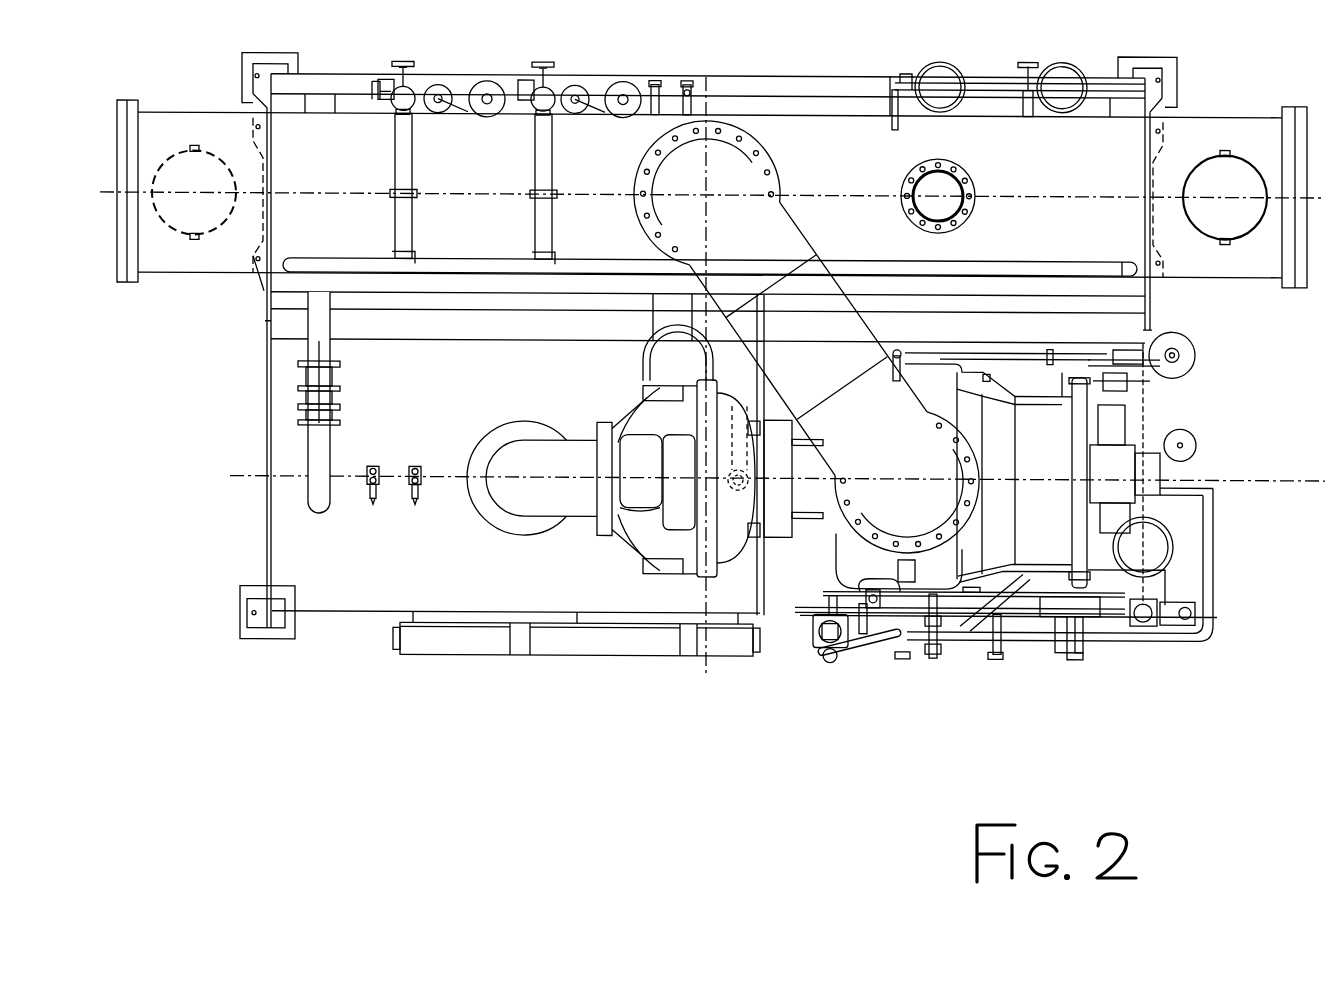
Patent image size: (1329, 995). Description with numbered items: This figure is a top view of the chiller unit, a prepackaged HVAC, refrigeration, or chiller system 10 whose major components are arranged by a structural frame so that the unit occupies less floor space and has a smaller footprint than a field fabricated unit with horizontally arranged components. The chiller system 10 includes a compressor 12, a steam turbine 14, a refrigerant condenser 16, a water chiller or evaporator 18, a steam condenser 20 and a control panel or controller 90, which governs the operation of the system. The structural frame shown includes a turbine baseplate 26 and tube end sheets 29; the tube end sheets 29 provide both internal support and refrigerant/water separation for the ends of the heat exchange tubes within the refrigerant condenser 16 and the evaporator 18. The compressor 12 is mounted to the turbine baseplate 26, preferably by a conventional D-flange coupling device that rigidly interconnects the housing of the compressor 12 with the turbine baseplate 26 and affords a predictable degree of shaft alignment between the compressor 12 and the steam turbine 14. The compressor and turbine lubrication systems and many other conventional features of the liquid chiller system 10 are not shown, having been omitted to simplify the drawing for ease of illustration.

The chiller system 10 is at (240, 732).
The compressor 12 is at (630, 414).
The steam turbine 14 is at (1040, 405).
The refrigerant condenser 16 is at (870, 80).
The water chiller or evaporator 18 is at (318, 602).
The steam condenser 20 is at (1243, 272).
The turbine baseplate 26 is at (788, 595).
The tube end sheets 29 is at (262, 404).
The control panel or controller 90 is at (615, 655).